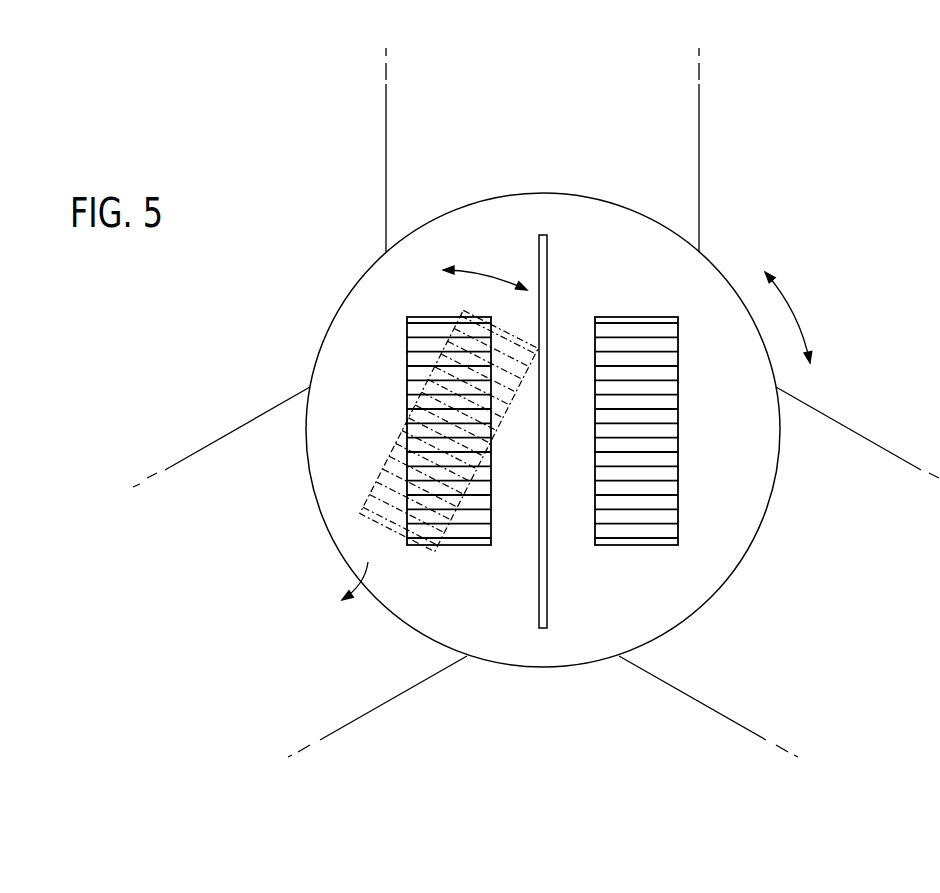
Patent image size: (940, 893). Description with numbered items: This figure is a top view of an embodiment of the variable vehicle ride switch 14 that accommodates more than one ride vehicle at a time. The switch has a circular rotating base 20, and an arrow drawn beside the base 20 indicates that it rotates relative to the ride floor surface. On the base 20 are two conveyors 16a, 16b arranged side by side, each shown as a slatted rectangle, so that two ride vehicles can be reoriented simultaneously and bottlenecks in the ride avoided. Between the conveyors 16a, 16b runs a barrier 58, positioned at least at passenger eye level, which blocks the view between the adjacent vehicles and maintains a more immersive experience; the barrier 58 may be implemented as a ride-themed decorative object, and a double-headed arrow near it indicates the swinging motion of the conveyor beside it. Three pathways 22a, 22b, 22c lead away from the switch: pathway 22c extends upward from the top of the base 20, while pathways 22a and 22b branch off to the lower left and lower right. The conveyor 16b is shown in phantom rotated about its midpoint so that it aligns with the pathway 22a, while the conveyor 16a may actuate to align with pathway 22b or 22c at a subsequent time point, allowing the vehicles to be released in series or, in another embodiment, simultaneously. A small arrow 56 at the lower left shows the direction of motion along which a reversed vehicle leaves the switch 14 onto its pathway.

The variable vehicle ride switch 14 is at (277, 263).
The conveyor 16a is at (678, 373).
The conveyor 16b is at (407, 343).
The base 20 is at (698, 269).
The pathway 22a is at (275, 606).
The pathway 22b is at (860, 598).
The pathway 22c is at (572, 140).
The arrow indicating direction of motion 56 is at (347, 561).
The barrier 58 is at (537, 253).